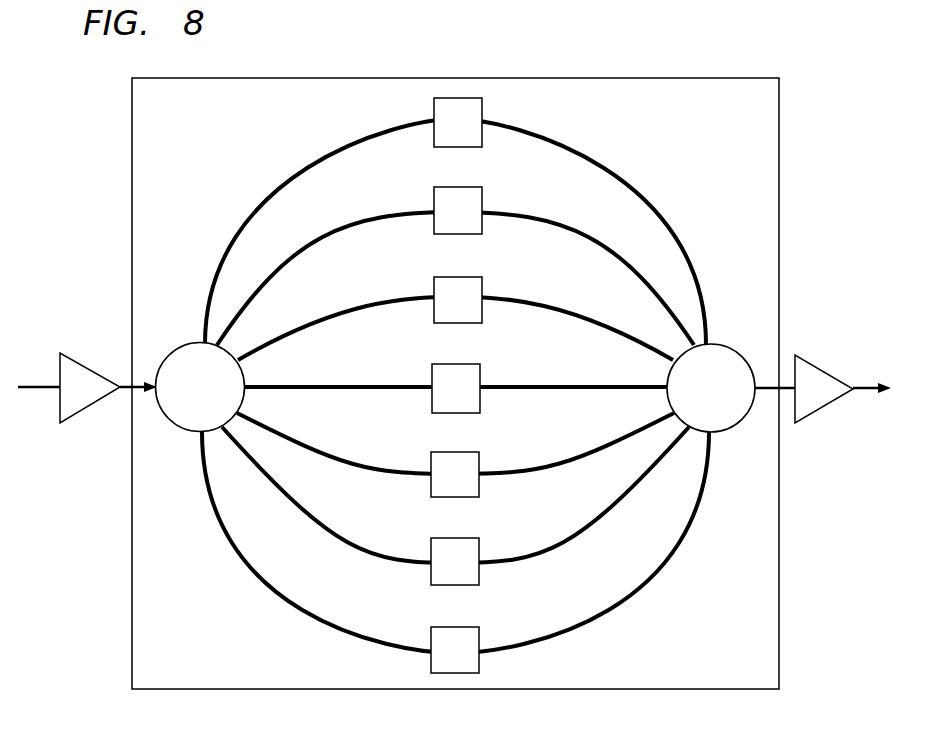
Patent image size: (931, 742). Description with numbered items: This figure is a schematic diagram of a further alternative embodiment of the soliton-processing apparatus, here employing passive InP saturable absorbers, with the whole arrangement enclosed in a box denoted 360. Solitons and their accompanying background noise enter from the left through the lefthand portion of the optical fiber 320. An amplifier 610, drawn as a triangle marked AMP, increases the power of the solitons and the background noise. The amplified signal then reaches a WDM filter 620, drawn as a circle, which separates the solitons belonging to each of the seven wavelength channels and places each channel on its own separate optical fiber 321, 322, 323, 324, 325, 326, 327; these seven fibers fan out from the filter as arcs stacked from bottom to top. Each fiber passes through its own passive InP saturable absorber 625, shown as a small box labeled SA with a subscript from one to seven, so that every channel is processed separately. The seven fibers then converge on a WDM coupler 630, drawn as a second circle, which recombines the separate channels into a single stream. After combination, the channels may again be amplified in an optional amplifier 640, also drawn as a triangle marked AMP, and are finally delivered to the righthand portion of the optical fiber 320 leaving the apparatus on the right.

The optical signal monitoring system 360 is at (573, 63).
The optical fiber 320 is at (42, 383).
The amplifier 610 is at (87, 363).
The optional amplifier 640 is at (814, 365).
The WDM filter 620 is at (171, 343).
The WDM coupler 630 is at (735, 349).
The passive InP saturable absorber 625 is at (484, 112).
The optical fiber 321 is at (325, 620).
The optical fiber 322 is at (327, 530).
The optical fiber 323 is at (373, 470).
The optical fiber 324 is at (342, 390).
The optical fiber 325 is at (325, 326).
The optical fiber 326 is at (332, 240).
The optical fiber 327 is at (323, 160).